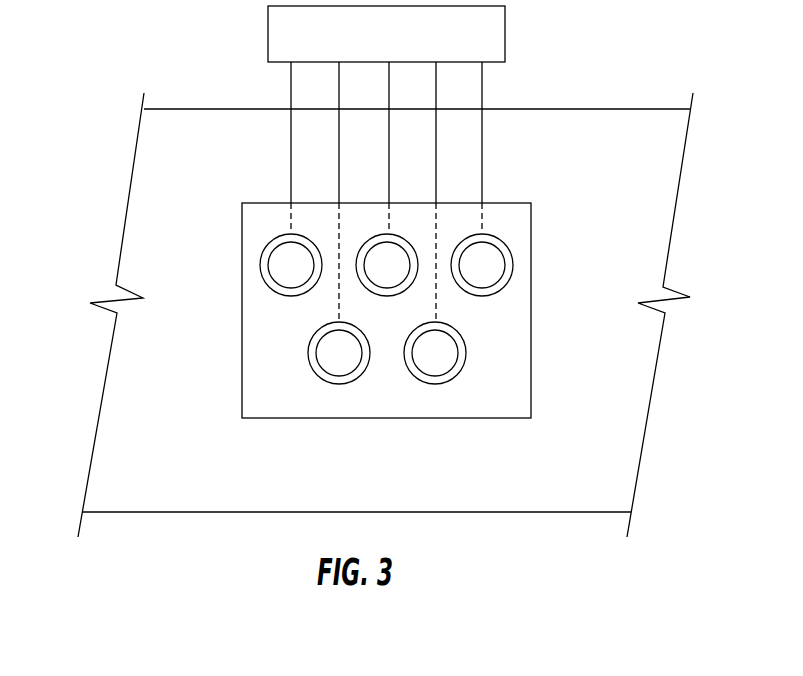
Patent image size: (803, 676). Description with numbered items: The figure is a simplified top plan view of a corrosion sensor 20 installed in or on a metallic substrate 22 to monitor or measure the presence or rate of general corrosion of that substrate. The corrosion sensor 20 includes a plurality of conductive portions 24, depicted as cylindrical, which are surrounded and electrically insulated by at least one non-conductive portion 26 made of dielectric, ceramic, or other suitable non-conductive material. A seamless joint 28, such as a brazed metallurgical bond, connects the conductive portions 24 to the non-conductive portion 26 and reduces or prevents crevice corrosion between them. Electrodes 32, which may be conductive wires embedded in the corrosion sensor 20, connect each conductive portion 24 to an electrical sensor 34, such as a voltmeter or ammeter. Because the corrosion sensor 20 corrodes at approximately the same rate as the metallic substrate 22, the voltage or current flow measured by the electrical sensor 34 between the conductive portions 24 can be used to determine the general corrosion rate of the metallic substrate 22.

The corrosion sensor 20 is at (365, 291).
The metallic substrate 22 is at (214, 186).
The conductive portions 24 is at (433, 358).
The non-conductive portion 26 is at (293, 353).
The seamless joint 28 is at (510, 280).
The electrodes 32 is at (482, 150).
The electrical sensor 34 is at (406, 43).